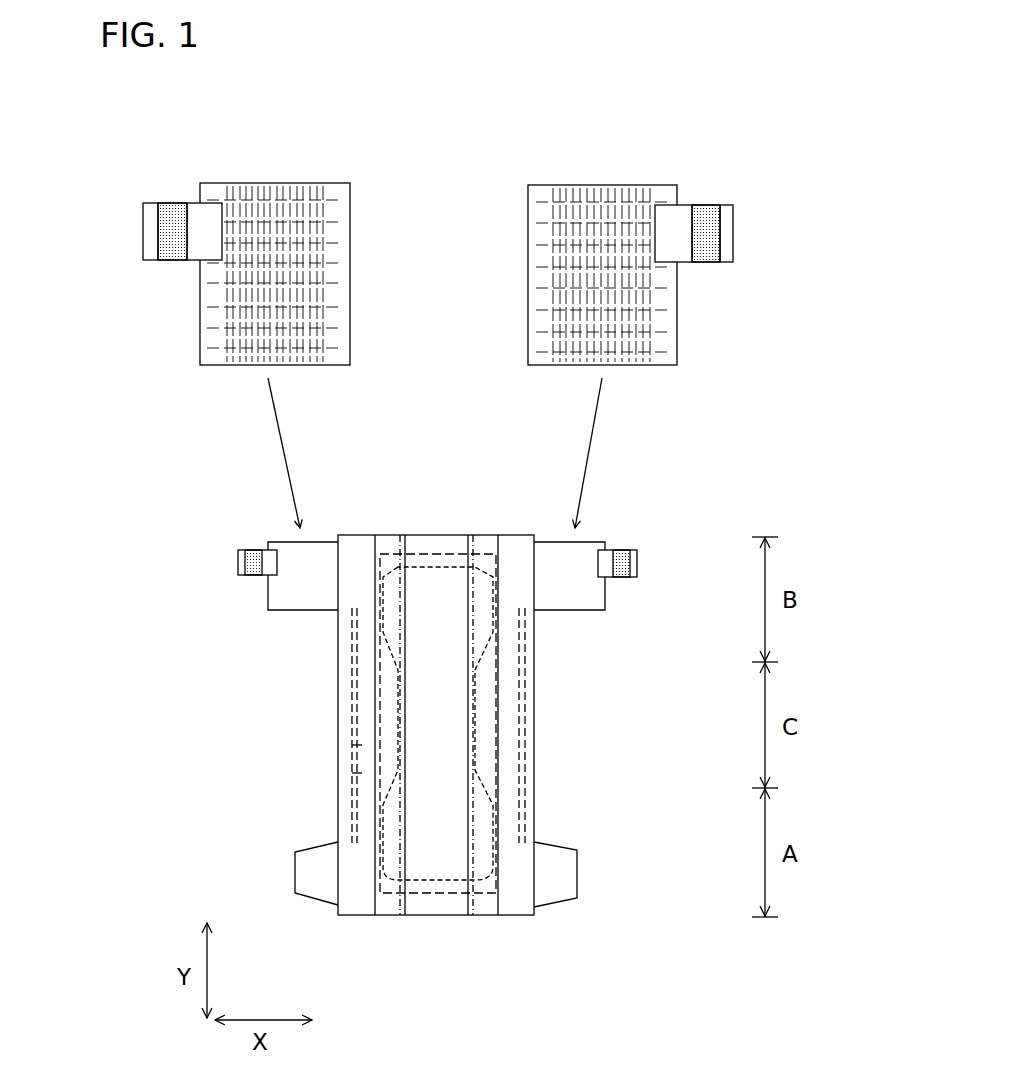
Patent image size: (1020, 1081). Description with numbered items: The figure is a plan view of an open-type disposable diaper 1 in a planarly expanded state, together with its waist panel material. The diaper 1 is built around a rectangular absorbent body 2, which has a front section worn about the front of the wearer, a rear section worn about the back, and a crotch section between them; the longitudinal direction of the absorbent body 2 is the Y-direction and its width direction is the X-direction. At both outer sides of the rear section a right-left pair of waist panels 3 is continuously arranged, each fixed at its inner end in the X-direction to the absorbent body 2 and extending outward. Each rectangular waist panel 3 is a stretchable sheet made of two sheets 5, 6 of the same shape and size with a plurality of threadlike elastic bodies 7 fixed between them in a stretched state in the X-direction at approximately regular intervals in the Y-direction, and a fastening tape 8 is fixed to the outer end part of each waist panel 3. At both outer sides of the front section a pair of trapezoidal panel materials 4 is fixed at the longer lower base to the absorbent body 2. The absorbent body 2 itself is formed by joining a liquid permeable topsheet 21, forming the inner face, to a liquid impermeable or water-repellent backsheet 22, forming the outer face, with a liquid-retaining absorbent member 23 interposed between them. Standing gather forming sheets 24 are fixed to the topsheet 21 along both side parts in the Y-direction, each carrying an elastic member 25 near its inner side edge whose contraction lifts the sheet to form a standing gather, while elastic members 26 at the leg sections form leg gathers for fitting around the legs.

The open-type disposable diaper 1 is at (438, 549).
The absorbent body 2 is at (463, 758).
The waist panel 3 is at (438, 334).
The panel material 4 is at (312, 888).
The sheet 5 is at (217, 190).
The sheet 6 is at (200, 192).
The threadlike elastic bodies 7 is at (330, 218).
The fastening tape 8 is at (150, 223).
The topsheet 21 is at (440, 735).
The backsheet 22 is at (455, 768).
The absorbent member 23 is at (483, 792).
The standing gather forming sheet 24 is at (345, 638).
The elastic member 25 is at (385, 634).
The elastic members 26 is at (357, 752).